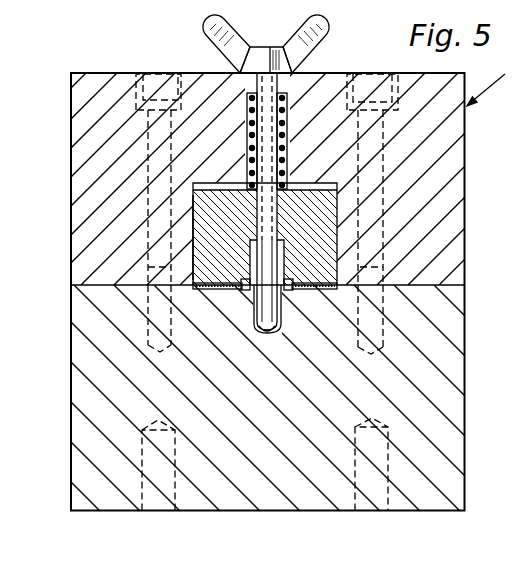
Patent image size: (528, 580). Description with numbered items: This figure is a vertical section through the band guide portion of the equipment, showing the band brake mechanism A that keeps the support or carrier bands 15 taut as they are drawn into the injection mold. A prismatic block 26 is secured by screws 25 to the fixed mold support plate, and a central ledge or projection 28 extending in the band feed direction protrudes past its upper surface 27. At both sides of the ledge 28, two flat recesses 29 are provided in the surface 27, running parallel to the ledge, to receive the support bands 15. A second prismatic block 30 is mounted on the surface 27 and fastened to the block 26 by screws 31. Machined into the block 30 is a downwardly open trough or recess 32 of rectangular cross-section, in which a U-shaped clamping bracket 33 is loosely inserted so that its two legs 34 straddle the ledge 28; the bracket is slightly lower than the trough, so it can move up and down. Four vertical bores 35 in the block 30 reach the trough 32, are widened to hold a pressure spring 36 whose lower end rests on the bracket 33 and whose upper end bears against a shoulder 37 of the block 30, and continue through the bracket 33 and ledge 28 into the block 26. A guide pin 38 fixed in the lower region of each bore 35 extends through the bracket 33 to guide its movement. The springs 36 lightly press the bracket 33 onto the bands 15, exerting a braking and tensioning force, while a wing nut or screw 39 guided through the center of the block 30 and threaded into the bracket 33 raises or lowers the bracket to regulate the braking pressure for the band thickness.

The support or carrier bands 15 is at (244, 291).
The screws 25 is at (380, 466).
The prismatic block 26 is at (440, 336).
The upper surface 27 is at (430, 291).
The central ledge or projection 28 is at (284, 252).
The flat recesses 29 is at (225, 291).
The second prismatic block 30 is at (440, 202).
The screws 31 is at (155, 311).
The trough or recess 32 is at (340, 182).
The clamping bracket 33 is at (193, 208).
The legs 34 is at (250, 265).
The vertical bores 35 is at (247, 74).
The pressure spring 36 is at (338, 73).
The shoulder 37 is at (287, 126).
The guide pin 38 is at (278, 320).
The wing nut or screw 39 is at (245, 47).
The band brake mechanism A is at (495, 83).